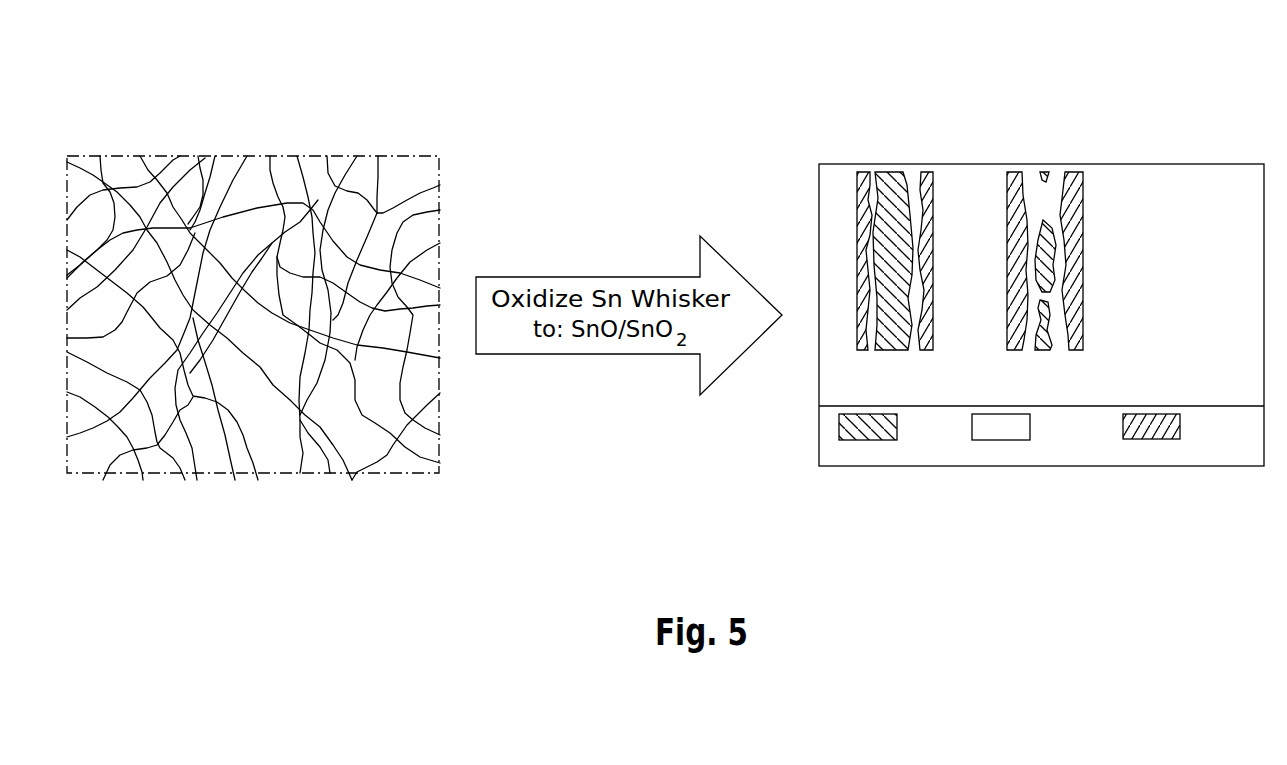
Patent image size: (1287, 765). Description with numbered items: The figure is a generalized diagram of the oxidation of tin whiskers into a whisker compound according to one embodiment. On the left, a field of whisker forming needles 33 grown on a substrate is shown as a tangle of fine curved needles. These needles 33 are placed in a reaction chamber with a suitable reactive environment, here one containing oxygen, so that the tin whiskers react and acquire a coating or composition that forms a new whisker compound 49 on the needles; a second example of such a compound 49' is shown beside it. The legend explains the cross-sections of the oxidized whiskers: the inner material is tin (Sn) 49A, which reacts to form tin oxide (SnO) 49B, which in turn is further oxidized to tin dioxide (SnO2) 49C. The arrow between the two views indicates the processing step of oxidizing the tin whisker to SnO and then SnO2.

The whisker forming needles 33 is at (287, 182).
The whisker compound 49 is at (875, 198).
The whisker compound 49' is at (1062, 198).
The tin (Sn) 49A is at (866, 440).
The tin oxide (SnO) 49B is at (997, 440).
The tin dioxide (SnO2) 49C is at (1150, 440).